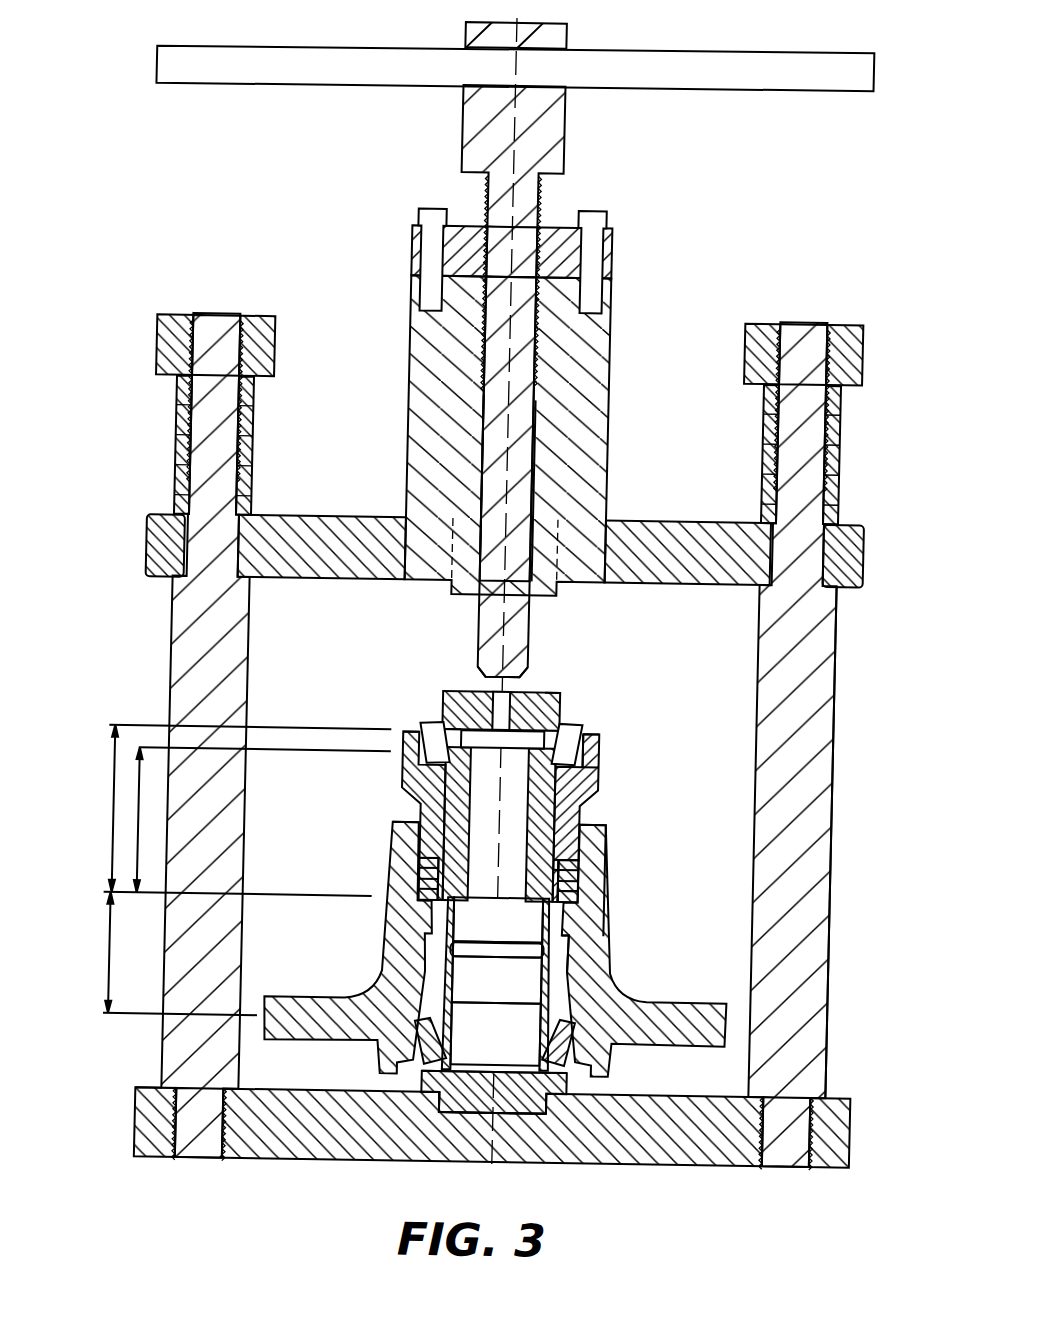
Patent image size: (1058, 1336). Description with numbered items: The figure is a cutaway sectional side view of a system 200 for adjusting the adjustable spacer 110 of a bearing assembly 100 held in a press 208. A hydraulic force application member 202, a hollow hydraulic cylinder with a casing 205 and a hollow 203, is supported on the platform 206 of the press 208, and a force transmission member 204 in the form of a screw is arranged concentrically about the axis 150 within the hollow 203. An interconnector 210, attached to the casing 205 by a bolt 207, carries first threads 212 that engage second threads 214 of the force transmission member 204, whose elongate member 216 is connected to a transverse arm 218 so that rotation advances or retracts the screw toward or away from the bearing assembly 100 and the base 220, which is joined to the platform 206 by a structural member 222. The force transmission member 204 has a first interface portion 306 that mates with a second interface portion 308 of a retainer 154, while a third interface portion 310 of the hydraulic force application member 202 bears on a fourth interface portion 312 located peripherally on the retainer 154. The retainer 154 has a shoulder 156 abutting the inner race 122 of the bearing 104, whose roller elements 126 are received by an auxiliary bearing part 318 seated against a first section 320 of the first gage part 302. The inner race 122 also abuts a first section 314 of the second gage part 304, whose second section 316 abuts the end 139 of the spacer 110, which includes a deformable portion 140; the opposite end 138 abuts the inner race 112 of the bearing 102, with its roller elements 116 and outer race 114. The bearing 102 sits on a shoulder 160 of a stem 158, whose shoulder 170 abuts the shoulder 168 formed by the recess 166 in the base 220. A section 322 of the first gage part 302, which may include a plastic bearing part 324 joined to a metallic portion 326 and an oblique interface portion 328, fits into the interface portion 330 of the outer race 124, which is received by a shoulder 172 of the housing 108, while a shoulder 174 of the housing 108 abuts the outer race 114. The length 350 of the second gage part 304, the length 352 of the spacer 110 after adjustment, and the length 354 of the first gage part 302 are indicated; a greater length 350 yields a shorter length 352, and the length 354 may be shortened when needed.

The bearing assembly 100 is at (357, 731).
The bearing 102 is at (440, 1004).
The bearing 104 is at (592, 715).
The housing 108 is at (609, 971).
The adjustable spacer 110 is at (551, 926).
The inner race 112 is at (457, 1052).
The outer race 114 is at (580, 1027).
The roller elements 116 is at (446, 1031).
The inner race 122 is at (563, 710).
The outer race 124 is at (580, 886).
The roller elements 126 is at (568, 735).
The end 138 is at (459, 985).
The end 139 is at (453, 902).
The deformable portion 140 is at (451, 947).
The axis 150 is at (504, 10).
The retainer 154 is at (465, 709).
The shoulder 156 is at (431, 761).
The stem 158 is at (527, 1106).
The shoulder 160 is at (457, 1077).
The recess 166 is at (482, 1114).
The shoulder 168 is at (432, 1110).
The shoulder 170 is at (452, 1090).
The shoulder 172 is at (415, 904).
The shoulder 174 is at (591, 1008).
The system 200 is at (116, 1182).
The hydraulic force application member 202 is at (538, 546).
The hollow 203 is at (476, 466).
The force transmission member 204 is at (511, 408).
The casing 205 is at (584, 351).
The platform 206 is at (644, 546).
The bolt 207 is at (590, 250).
The press 208 is at (853, 689).
The interconnector 210 is at (454, 243).
The first threads 212 is at (534, 243).
The second threads 214 is at (539, 205).
The elongate member 216 is at (487, 406).
The arm 218 is at (823, 74).
The base 220 is at (331, 1142).
The structural member 222 is at (827, 841).
The first gage part 302 is at (593, 780).
The second gage part 304 is at (546, 809).
The first interface portion 306 is at (513, 662).
The second interface portion 308 is at (510, 690).
The third interface portion 310 is at (459, 594).
The fourth interface portion 312 is at (452, 701).
The first section 314 is at (449, 773).
The second section 316 is at (456, 893).
The bearing part 318 is at (579, 755).
The first section 320 is at (591, 773).
The section 322 is at (580, 847).
The bearing part 324 is at (580, 866).
The portion 326 is at (558, 866).
The interface portion 328 is at (572, 882).
The interface portion 330 is at (582, 896).
The length 350 is at (140, 839).
The length 352 is at (115, 955).
The length 354 is at (116, 793).